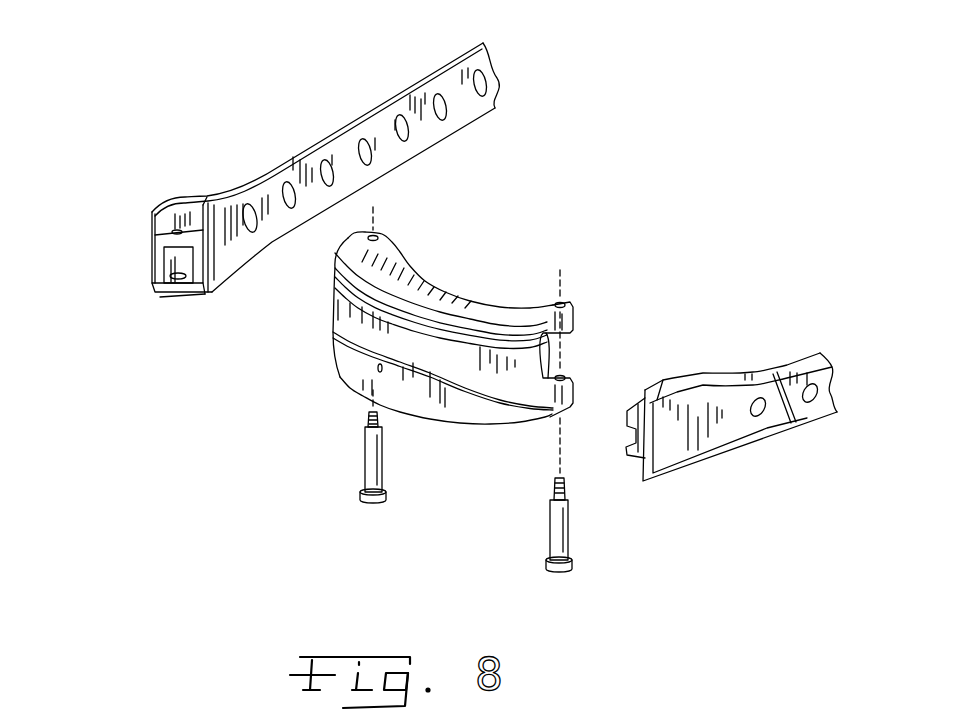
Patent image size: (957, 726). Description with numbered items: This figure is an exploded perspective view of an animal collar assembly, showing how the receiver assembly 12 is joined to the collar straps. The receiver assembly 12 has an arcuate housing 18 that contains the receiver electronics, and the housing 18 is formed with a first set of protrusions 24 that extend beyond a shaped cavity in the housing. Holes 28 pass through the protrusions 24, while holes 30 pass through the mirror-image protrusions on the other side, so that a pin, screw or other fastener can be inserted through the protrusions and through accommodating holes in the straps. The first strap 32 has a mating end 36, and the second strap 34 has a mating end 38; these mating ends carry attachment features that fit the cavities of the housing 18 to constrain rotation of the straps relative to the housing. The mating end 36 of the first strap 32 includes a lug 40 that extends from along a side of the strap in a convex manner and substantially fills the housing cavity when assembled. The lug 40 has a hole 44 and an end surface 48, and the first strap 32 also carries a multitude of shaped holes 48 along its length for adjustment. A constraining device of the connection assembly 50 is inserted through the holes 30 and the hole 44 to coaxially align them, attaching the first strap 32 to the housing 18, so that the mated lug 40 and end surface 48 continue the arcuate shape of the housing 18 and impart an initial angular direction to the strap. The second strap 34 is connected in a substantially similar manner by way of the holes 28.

The receiver assembly 12 is at (561, 223).
The arcuate housing 18 is at (450, 293).
The first set of protrusions 24 is at (575, 316).
The holes 28 is at (565, 302).
The holes 30 is at (378, 233).
The first strap 32 is at (392, 96).
The second strap 34 is at (785, 355).
The mating end 36 is at (187, 181).
The mating end 38 is at (658, 493).
The lug 40 is at (150, 245).
The hole 44 is at (172, 229).
The end surface 48 is at (410, 133).
The connection assembly 50 is at (370, 453).